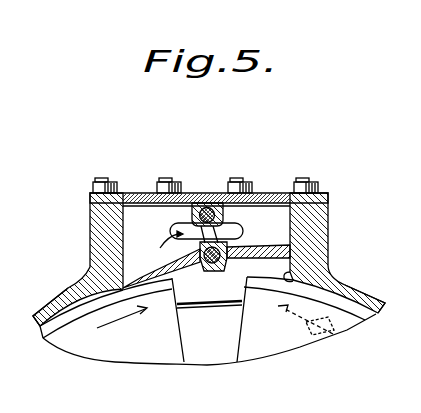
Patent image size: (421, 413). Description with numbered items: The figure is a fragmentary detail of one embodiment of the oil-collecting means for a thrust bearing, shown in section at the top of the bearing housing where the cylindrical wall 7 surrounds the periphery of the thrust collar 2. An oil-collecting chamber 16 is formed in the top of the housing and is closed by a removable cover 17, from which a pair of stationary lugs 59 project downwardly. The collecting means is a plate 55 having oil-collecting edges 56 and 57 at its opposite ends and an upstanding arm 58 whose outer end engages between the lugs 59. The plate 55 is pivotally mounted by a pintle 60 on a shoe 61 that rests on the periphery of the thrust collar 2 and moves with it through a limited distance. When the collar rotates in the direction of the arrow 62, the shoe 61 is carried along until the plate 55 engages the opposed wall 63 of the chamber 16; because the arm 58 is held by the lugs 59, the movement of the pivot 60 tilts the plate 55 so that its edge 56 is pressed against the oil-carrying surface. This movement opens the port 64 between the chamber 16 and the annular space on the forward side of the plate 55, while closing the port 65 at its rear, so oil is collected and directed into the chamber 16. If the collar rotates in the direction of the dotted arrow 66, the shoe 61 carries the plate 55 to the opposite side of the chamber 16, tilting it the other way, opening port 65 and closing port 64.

The thrust collar 2 is at (76, 314).
The cylindrical wall 7 is at (40, 324).
The oil-collecting chamber 16 is at (146, 226).
The cover 17 is at (262, 196).
The plate 55 is at (264, 260).
The oil-collecting edge 56 is at (141, 276).
The oil-collecting edge 57 is at (294, 251).
The upstanding arm 58 is at (207, 233).
The stationary lugs 59 is at (212, 204).
The pintle 60 is at (211, 283).
The shoe 61 is at (216, 284).
The arrow 62 is at (117, 314).
The opposed wall 63 is at (313, 218).
The port 64 is at (84, 286).
The port 65 is at (292, 279).
The dotted arrow 66 is at (318, 338).